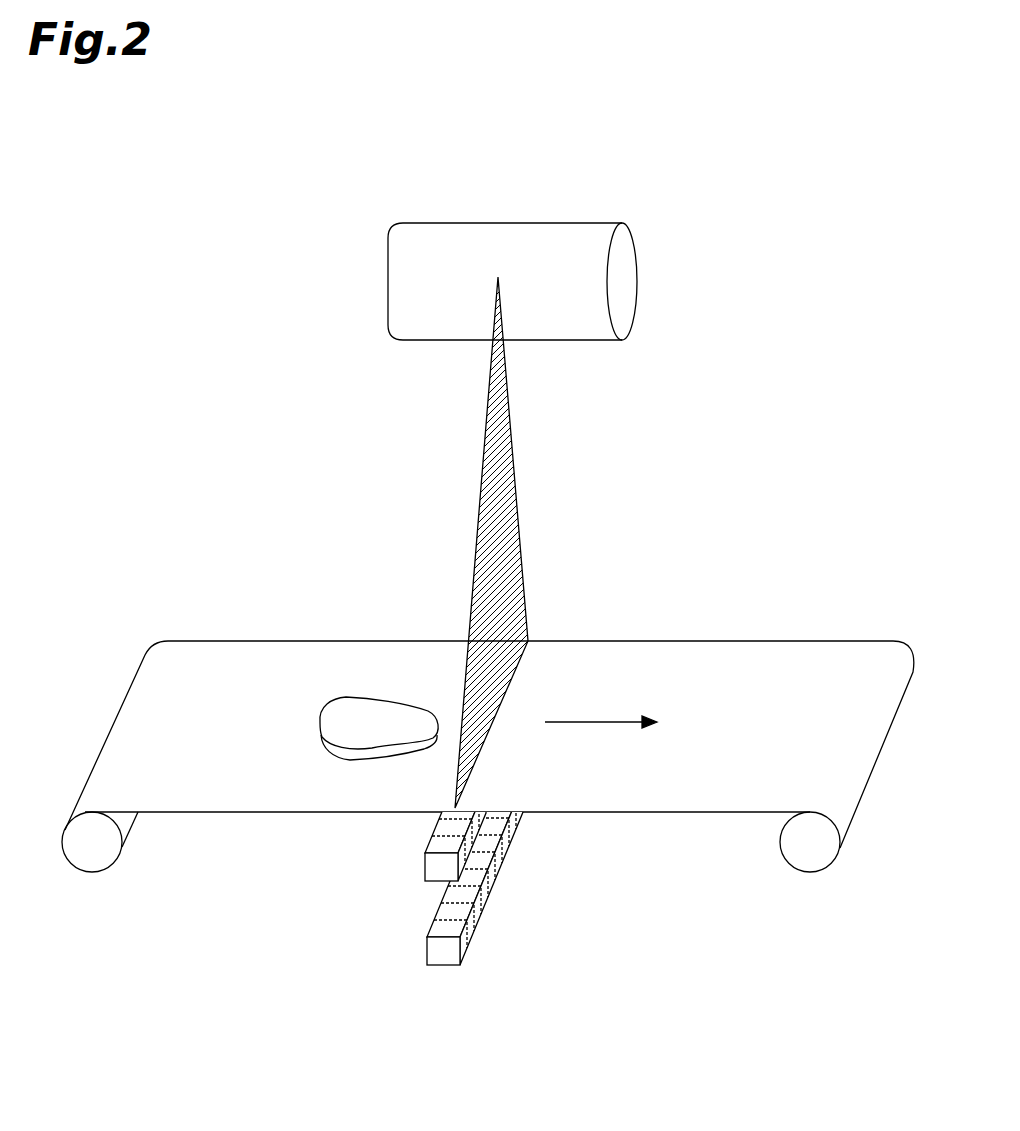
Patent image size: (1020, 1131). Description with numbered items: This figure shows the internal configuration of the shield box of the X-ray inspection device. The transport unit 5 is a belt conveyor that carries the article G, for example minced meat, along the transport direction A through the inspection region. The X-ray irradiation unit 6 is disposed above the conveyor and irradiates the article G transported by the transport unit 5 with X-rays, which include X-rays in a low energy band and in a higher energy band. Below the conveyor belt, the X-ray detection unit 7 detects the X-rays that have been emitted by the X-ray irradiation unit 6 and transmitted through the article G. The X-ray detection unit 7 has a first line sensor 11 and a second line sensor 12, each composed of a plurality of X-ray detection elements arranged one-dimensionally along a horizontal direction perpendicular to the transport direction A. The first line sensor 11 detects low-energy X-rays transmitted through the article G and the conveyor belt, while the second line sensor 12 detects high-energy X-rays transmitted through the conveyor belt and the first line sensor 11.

The transport unit 5 is at (216, 663).
The X-ray irradiation unit 6 is at (570, 235).
The X-ray detection unit 7 is at (462, 932).
The first line sensor 11 is at (437, 827).
The second line sensor 12 is at (485, 895).
The article G is at (388, 715).
The transport direction A is at (599, 720).